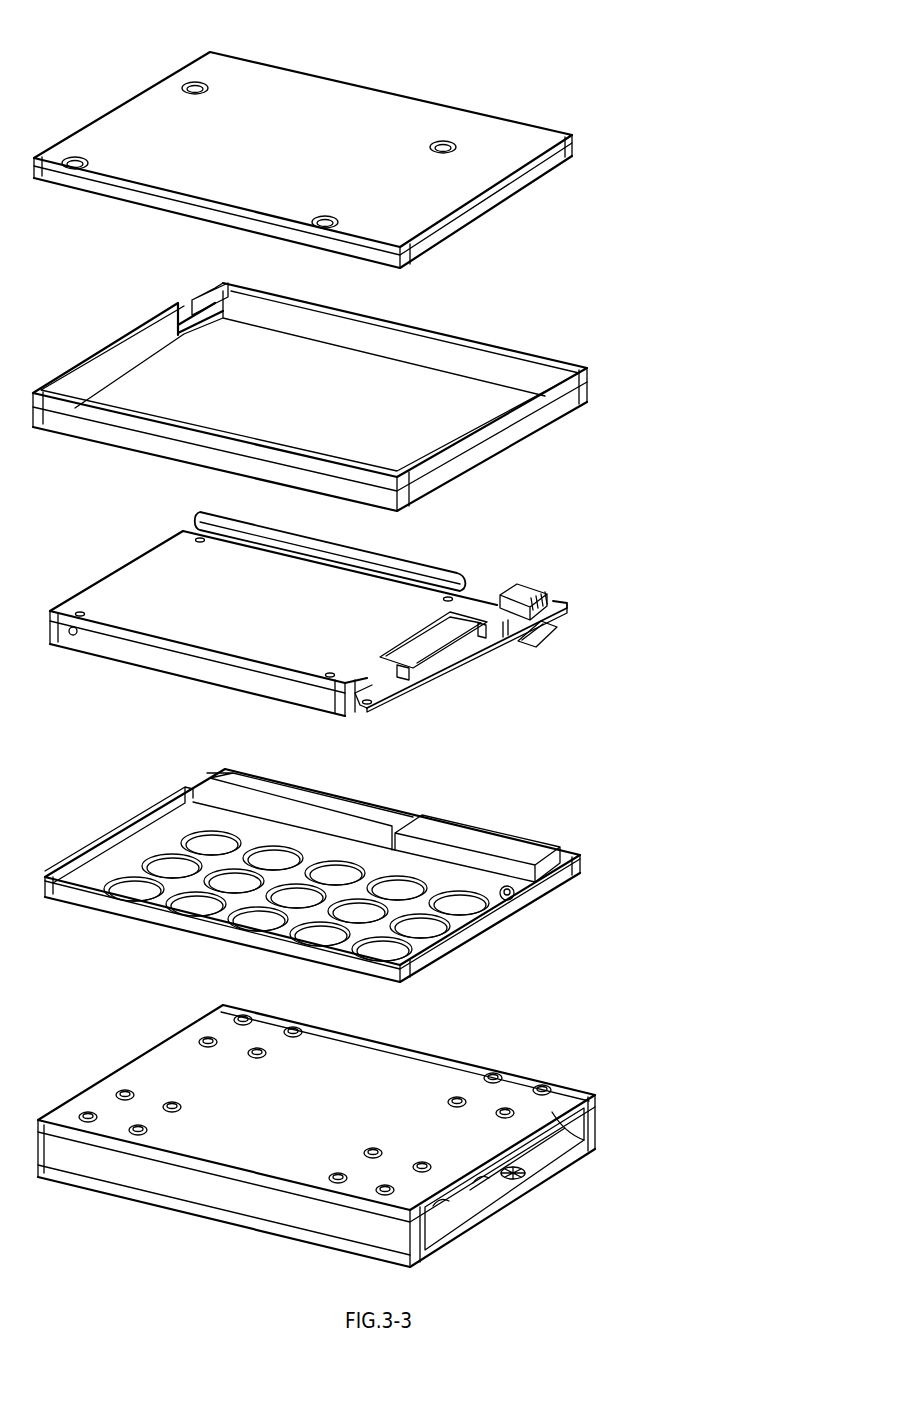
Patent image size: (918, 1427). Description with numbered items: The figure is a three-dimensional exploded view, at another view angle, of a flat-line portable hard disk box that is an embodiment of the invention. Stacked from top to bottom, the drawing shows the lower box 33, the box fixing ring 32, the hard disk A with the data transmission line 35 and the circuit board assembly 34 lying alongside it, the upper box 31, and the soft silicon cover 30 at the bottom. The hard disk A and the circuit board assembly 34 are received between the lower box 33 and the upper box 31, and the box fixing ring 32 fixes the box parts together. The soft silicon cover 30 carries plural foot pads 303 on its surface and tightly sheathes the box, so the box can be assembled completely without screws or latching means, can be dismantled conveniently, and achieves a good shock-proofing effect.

The lower box 33 is at (383, 86).
The box fixing ring 32 is at (475, 334).
The hard disk A is at (112, 590).
The data transmission line 35 is at (435, 573).
The circuit board assembly 34 is at (453, 667).
The upper box 31 is at (473, 815).
The soft silicon cover 30 is at (316, 1127).
The foot pads 303 is at (120, 1090).